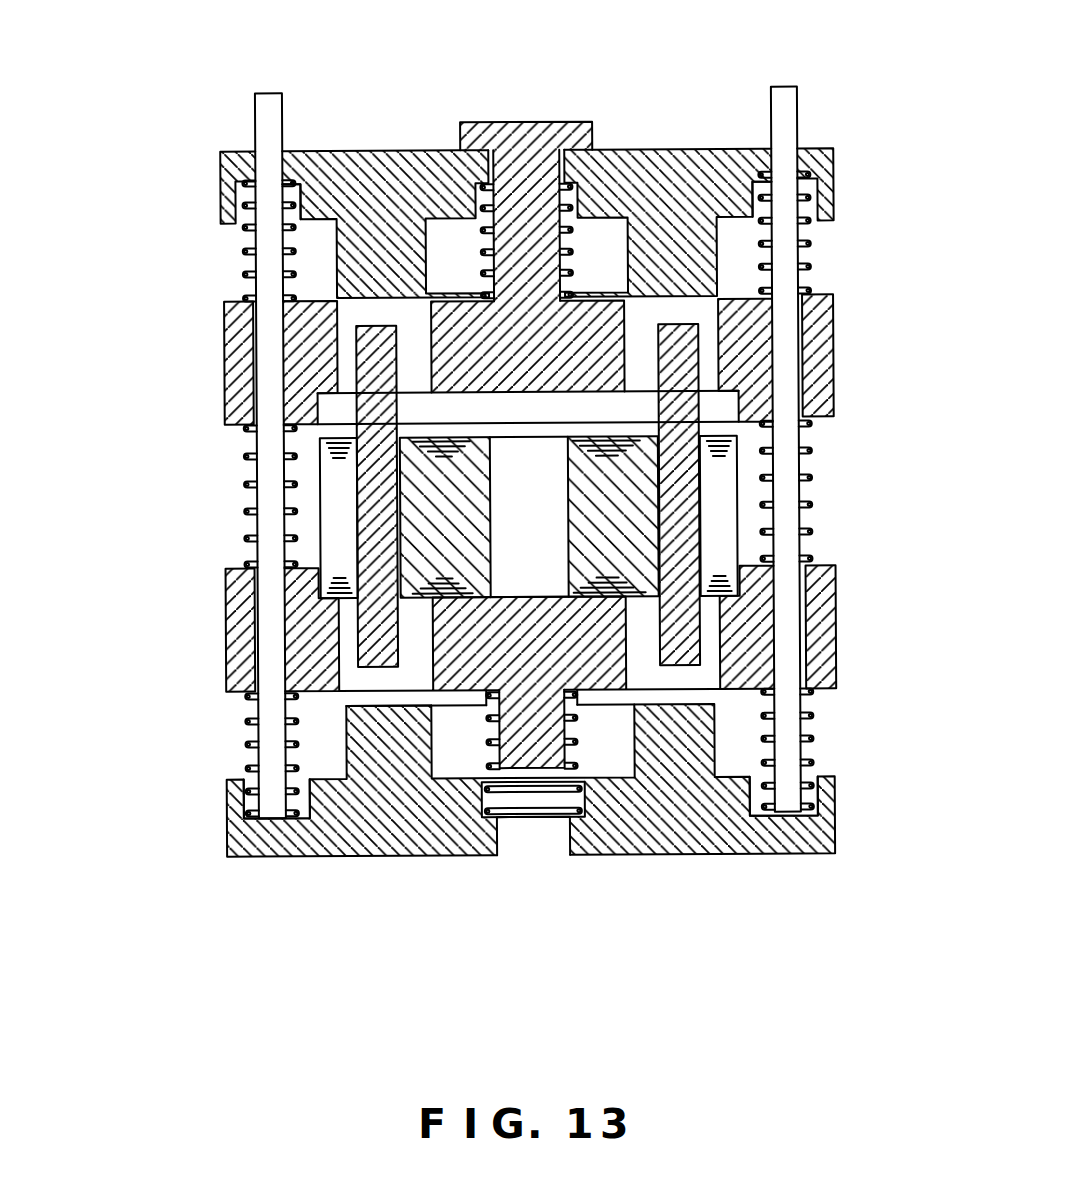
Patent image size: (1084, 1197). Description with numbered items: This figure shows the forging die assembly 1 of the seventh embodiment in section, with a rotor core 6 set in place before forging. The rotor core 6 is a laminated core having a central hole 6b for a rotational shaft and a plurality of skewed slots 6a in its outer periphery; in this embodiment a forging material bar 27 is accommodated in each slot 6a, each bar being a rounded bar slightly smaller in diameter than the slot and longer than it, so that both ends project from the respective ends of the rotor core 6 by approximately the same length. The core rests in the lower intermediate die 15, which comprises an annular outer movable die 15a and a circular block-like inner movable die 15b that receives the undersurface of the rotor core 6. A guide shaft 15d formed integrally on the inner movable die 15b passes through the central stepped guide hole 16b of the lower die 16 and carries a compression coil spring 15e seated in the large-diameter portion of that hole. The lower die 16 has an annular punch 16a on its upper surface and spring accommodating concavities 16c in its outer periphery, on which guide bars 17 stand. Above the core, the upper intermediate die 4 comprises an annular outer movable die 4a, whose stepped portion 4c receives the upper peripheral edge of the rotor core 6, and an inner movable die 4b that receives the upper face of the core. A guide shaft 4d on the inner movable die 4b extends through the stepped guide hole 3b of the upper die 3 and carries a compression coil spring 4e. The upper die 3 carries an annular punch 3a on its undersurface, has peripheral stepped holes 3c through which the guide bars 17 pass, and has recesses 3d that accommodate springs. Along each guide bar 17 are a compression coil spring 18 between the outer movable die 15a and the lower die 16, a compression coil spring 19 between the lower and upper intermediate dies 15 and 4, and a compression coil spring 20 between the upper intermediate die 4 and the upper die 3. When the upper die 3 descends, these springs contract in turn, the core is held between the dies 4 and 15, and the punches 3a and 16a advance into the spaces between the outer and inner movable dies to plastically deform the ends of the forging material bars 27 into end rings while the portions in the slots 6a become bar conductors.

The forging die assembly 1 is at (203, 126).
The upper die 3 is at (508, 239).
The punch 3a is at (805, 310).
The guide hole 3b is at (467, 192).
The stepped holes 3c is at (284, 184).
The recesses 3d is at (236, 224).
The upper intermediate die 4 is at (499, 346).
The outer movable die 4a is at (240, 310).
The inner movable die 4b is at (626, 332).
The stepped portion 4c is at (322, 402).
The guide shaft 4d is at (527, 150).
The compression coil spring 4e is at (483, 254).
The rotor core 6 is at (500, 503).
The slots 6a is at (325, 507).
The central hole 6b is at (576, 498).
The lower intermediate die 15 is at (509, 648).
The outer movable die 15a is at (232, 627).
The inner movable die 15b is at (722, 634).
The guide shaft 15d is at (566, 744).
The compression coil spring 15e is at (486, 744).
The lower die 16 is at (503, 813).
The punch 16a is at (372, 699).
The guide hole 16b is at (567, 842).
The spring accommodating concavities 16c is at (245, 794).
The guide bars 17 is at (258, 110).
The compression coil spring 18 is at (250, 735).
The compression coil spring 19 is at (246, 458).
The compression coil spring 20 is at (245, 252).
The forging material bars 27 is at (372, 347).